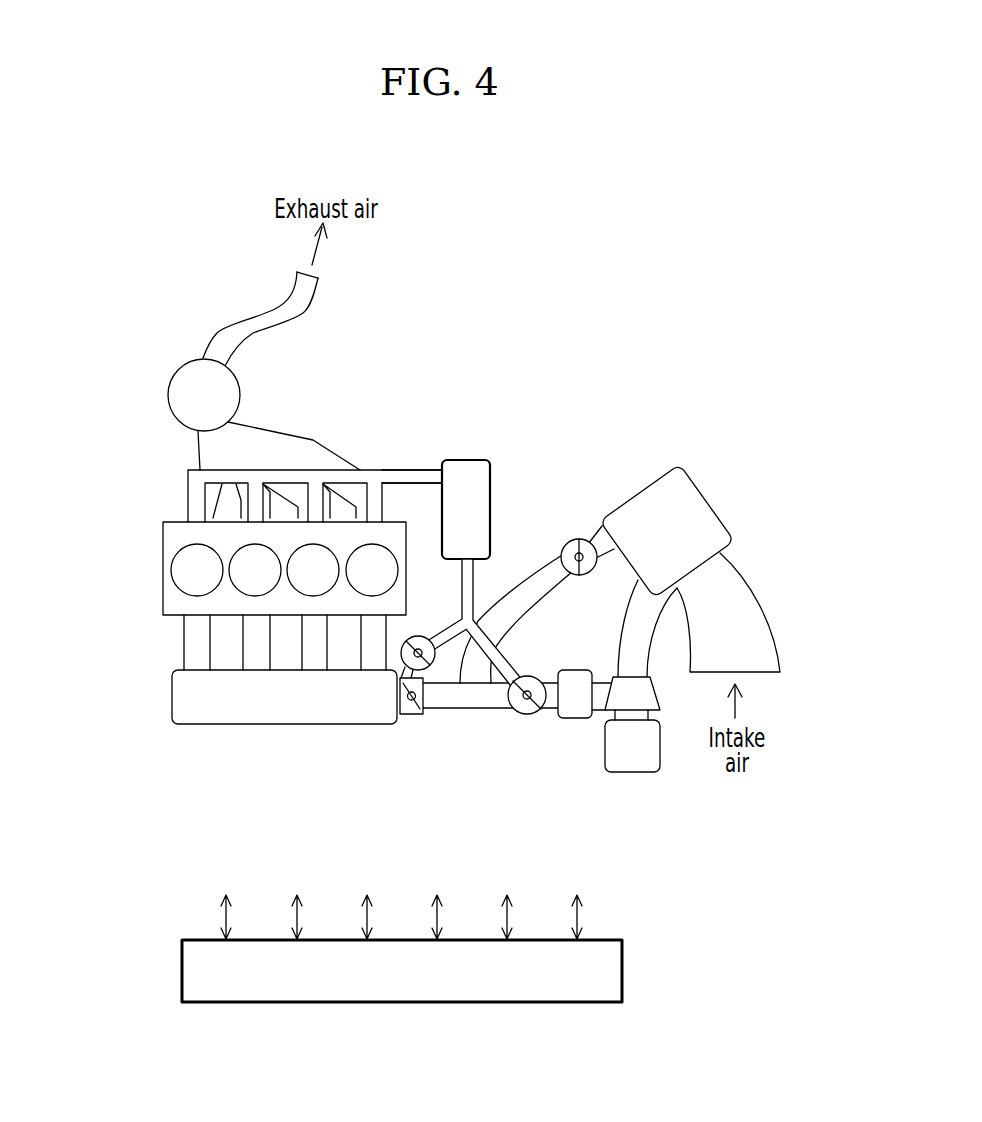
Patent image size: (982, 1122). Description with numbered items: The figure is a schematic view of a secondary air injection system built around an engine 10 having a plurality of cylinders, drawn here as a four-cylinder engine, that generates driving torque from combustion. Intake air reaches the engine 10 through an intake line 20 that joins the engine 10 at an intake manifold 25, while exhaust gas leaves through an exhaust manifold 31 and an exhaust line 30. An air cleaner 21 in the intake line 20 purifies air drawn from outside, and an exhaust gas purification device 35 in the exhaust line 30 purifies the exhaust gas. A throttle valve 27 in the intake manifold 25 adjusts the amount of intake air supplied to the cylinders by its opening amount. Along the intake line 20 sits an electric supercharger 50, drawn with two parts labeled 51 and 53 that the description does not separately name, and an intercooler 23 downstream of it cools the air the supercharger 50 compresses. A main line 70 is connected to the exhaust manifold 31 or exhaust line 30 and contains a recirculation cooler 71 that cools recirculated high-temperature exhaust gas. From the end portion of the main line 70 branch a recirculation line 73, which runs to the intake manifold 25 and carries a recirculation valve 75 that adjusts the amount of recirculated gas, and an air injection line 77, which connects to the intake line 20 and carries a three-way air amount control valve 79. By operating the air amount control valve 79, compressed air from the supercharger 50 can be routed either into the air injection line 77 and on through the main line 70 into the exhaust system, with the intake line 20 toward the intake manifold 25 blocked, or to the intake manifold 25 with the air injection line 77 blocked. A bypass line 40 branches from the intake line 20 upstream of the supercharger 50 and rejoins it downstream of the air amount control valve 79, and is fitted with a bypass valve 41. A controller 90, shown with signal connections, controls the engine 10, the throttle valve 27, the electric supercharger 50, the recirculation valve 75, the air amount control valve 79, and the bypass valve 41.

The engine 10 is at (162, 583).
The intake line 20 is at (648, 650).
The air cleaner 21 is at (713, 497).
The intercooler 23 is at (575, 718).
The intake manifold 25 is at (255, 724).
The throttle valve 27 is at (413, 715).
The exhaust line 30 is at (307, 317).
The exhaust manifold 31 is at (187, 500).
The exhaust gas purification device 35 is at (167, 395).
The bypass line 40 is at (580, 538).
The bypass valve 41 is at (562, 540).
The electric supercharger 50 is at (643, 777).
The motor 51 is at (630, 772).
The compressor 53 is at (657, 702).
The main line 70 is at (381, 468).
The recirculation cooler 71 is at (472, 458).
The recirculation line 73 is at (445, 641).
The recirculation valve 75 is at (400, 647).
The air injection line 77 is at (512, 660).
The three-way air amount control valve 79 is at (527, 714).
The controller 90 is at (182, 970).